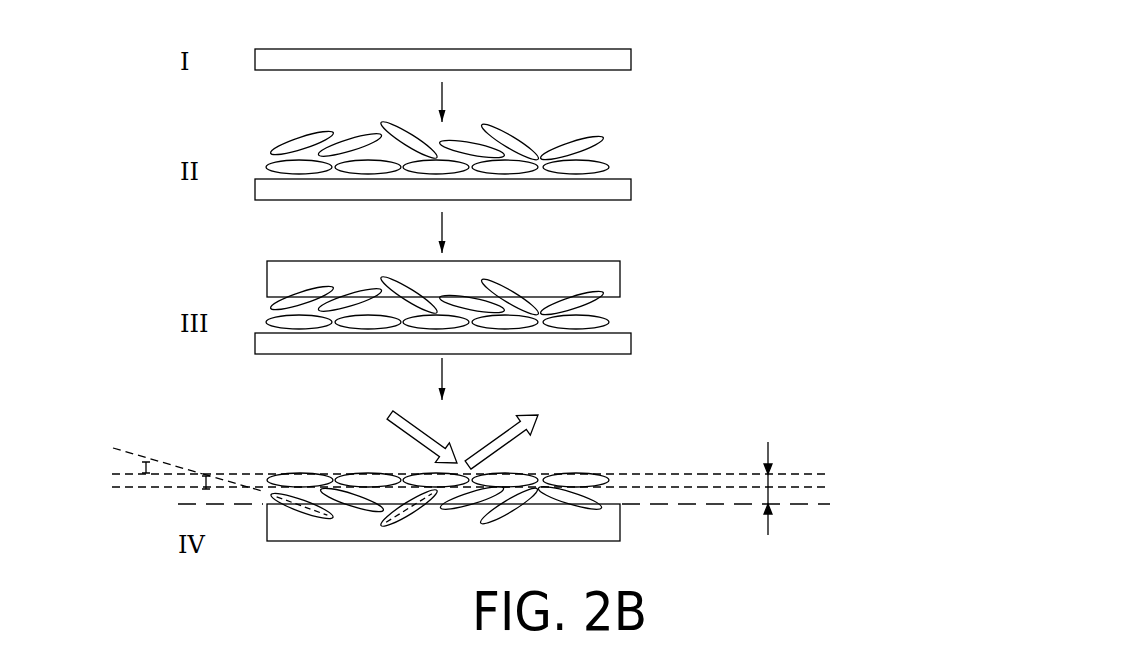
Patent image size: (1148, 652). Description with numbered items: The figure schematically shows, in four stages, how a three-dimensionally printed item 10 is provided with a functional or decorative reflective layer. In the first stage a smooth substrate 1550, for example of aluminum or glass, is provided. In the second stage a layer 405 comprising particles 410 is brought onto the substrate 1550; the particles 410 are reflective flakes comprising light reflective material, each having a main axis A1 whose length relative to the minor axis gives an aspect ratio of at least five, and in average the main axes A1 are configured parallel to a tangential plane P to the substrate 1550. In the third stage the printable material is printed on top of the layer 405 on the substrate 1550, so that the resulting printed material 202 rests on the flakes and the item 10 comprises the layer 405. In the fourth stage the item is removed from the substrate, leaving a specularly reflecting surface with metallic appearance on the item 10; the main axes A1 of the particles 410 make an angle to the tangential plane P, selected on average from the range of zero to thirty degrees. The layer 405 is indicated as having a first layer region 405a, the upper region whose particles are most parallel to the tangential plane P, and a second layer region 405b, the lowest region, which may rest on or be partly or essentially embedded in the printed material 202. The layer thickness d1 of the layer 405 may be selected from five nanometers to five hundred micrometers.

The substrate 1550 is at (642, 50).
The particles 410 is at (593, 167).
The 3D printed material 202 is at (636, 267).
The 3D item 10 is at (621, 546).
The layer 405 is at (267, 310).
The first layer region 405a is at (833, 478).
The second layer region 405b is at (833, 497).
The tangential plane P is at (792, 503).
The layer thickness d1 is at (781, 485).
The main axis A1 is at (353, 478).